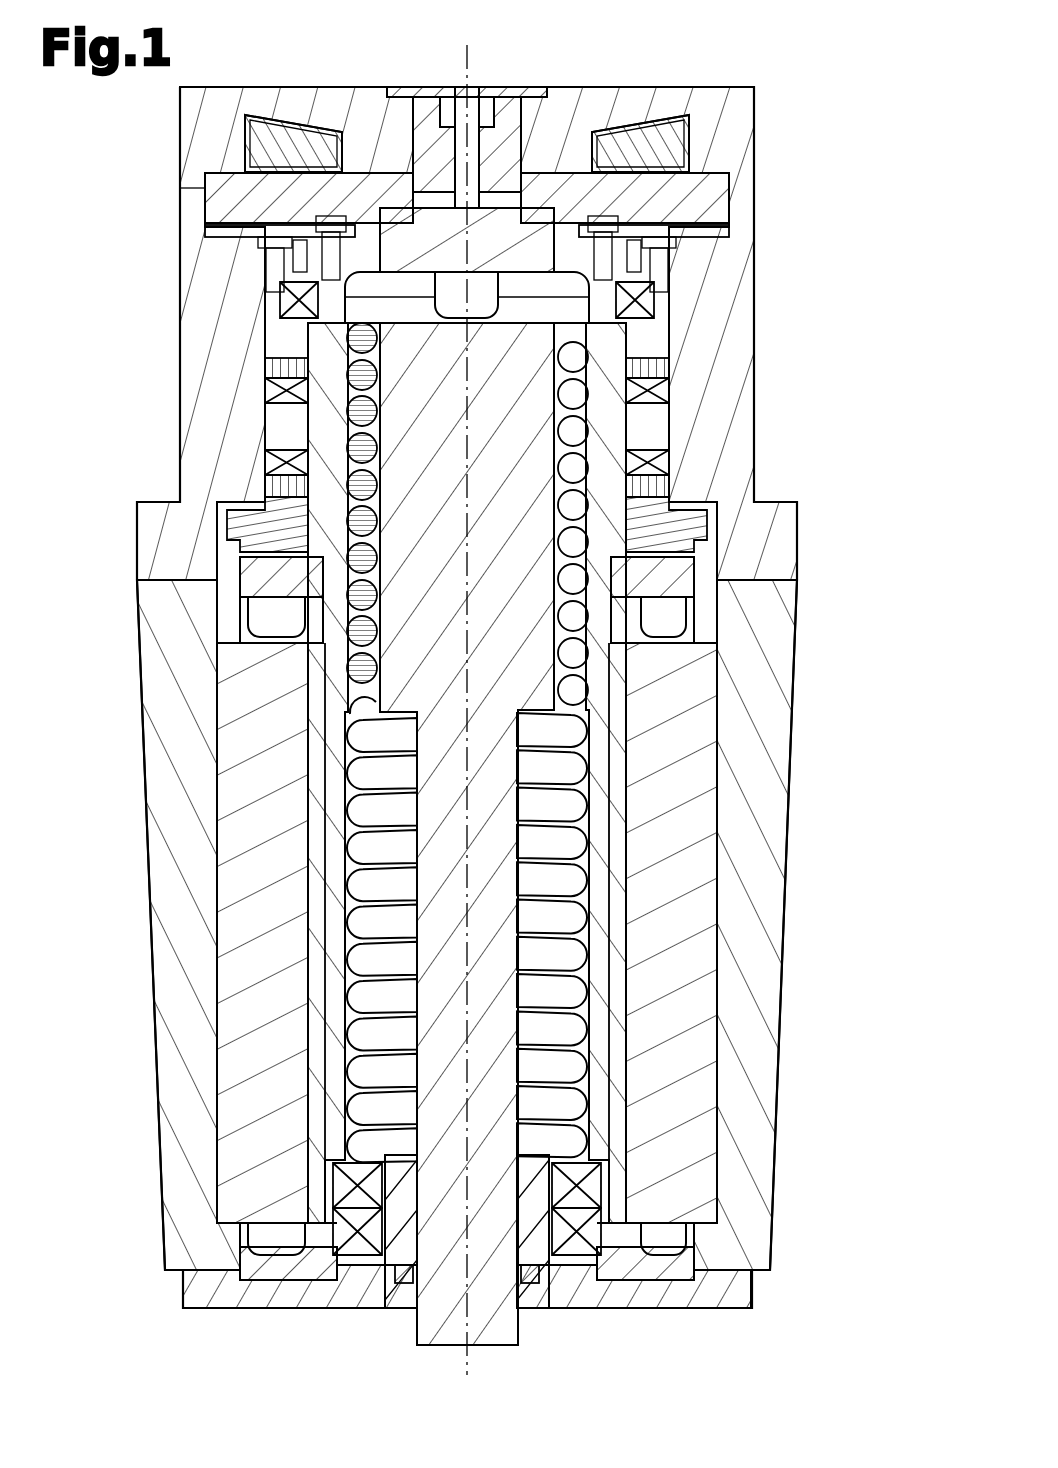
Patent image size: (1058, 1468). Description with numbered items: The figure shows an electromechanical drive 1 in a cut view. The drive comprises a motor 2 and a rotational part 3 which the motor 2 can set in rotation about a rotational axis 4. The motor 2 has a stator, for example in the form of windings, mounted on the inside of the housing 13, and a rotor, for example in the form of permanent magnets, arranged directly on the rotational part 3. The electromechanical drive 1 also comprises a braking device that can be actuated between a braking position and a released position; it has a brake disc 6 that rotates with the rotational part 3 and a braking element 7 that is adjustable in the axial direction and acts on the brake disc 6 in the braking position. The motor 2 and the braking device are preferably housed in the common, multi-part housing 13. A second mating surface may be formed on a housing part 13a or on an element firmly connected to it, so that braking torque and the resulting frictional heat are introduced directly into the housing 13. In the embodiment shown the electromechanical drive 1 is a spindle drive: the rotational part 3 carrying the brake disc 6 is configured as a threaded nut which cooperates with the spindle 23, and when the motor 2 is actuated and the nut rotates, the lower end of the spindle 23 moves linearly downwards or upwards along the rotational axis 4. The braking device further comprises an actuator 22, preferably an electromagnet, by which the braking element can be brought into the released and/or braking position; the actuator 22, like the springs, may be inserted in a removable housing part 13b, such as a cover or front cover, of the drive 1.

The electromechanical drive 1 is at (492, 691).
The motor 2 is at (267, 906).
The rotational part 3 is at (283, 337).
The rotational axis 4 is at (462, 622).
The brake disc 6 is at (728, 232).
The braking element 7 is at (705, 192).
The housing 13 is at (790, 400).
The housing part 13a is at (743, 313).
The removable housing part 13b is at (184, 117).
The actuator 22 is at (296, 140).
The spindle 23 is at (432, 855).